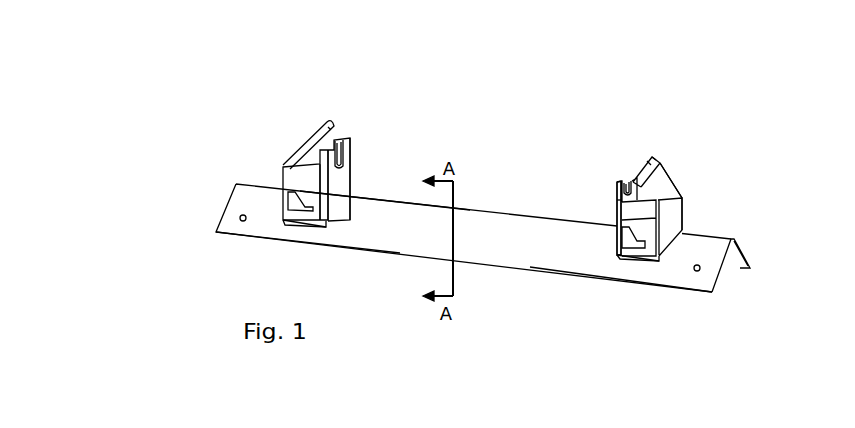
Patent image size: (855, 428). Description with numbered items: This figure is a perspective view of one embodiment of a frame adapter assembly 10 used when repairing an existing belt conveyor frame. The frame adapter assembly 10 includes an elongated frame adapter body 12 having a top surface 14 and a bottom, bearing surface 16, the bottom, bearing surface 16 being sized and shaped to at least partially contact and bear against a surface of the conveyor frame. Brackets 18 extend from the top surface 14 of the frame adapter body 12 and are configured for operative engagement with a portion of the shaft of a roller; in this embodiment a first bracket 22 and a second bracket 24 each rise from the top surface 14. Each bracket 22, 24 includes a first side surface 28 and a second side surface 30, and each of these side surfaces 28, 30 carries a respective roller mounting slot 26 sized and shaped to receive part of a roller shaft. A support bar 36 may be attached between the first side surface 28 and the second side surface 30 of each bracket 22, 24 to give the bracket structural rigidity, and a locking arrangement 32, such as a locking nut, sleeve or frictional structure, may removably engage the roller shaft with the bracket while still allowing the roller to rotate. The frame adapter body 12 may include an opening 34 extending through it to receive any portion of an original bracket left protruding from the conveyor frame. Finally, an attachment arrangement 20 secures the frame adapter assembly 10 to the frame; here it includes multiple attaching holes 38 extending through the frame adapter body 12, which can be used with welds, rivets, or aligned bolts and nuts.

The frame adapter assembly 10 is at (517, 150).
The frame adapter body 12 is at (236, 187).
The top surface 14 is at (374, 217).
The bottom, bearing surface 16 is at (733, 259).
The bracket 18 is at (361, 116).
The attachment arrangement 20 is at (229, 240).
The first bracket 22 is at (289, 139).
The second bracket 24 is at (621, 162).
The roller mounting slot 26 is at (327, 126).
The first side surface 28 is at (292, 160).
The second side surface 30 is at (330, 182).
The locking arrangement 32 is at (353, 165).
The opening 34 is at (303, 215).
The support bar 36 is at (278, 201).
The attaching hole 38 is at (239, 220).